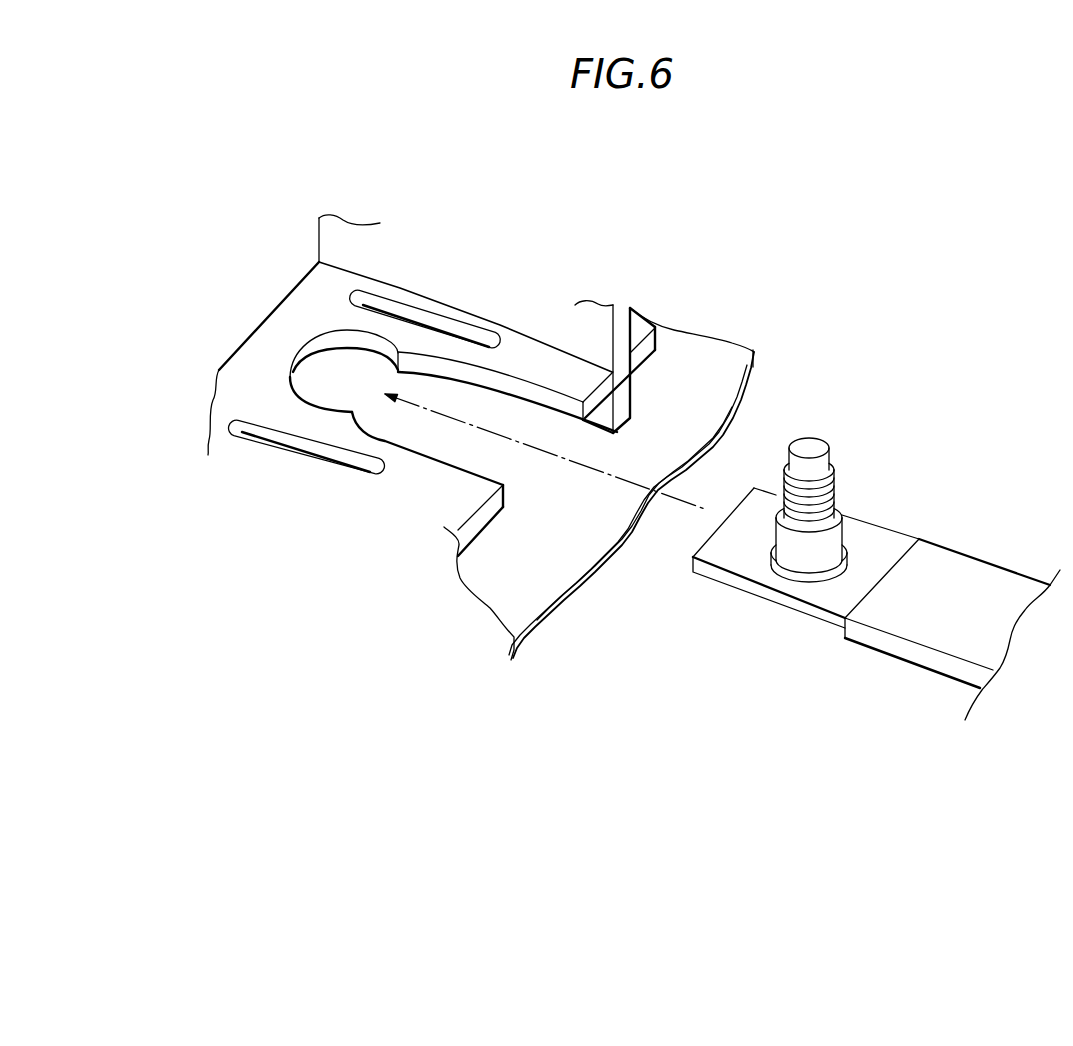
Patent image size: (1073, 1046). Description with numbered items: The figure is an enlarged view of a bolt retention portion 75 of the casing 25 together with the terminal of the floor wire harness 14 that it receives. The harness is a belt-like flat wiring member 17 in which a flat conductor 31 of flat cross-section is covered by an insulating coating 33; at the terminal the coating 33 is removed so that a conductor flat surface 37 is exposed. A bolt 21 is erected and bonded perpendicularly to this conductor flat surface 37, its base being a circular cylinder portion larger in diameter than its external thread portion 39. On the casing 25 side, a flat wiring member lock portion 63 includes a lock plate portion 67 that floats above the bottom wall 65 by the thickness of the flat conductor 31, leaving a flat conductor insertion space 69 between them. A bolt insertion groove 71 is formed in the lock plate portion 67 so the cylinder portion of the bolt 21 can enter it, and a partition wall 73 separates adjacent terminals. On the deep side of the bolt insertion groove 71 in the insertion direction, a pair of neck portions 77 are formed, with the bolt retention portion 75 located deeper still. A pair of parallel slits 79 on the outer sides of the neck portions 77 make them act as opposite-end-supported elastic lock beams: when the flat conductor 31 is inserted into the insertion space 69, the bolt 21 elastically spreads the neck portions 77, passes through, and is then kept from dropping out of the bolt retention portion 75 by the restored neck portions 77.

The floor wire harness 14 is at (986, 467).
The flat wiring member 17 is at (908, 666).
The bolt 21 is at (833, 455).
The casing 25 is at (648, 274).
The flat conductor 31 is at (877, 527).
The insulating coating 33 is at (990, 583).
The conductor flat surface 37 is at (747, 545).
The external thread portion 39 is at (835, 491).
The flat wiring member lock portion 63 is at (427, 428).
The bottom wall 65 is at (517, 579).
The lock plate portion 67 is at (247, 357).
The flat conductor insertion space 69 is at (602, 419).
The bolt insertion groove 71 is at (471, 473).
The partition wall 73 is at (617, 335).
The bolt retention portion 75 is at (293, 371).
The neck portion 77 is at (352, 412).
The slit 79 is at (440, 323).